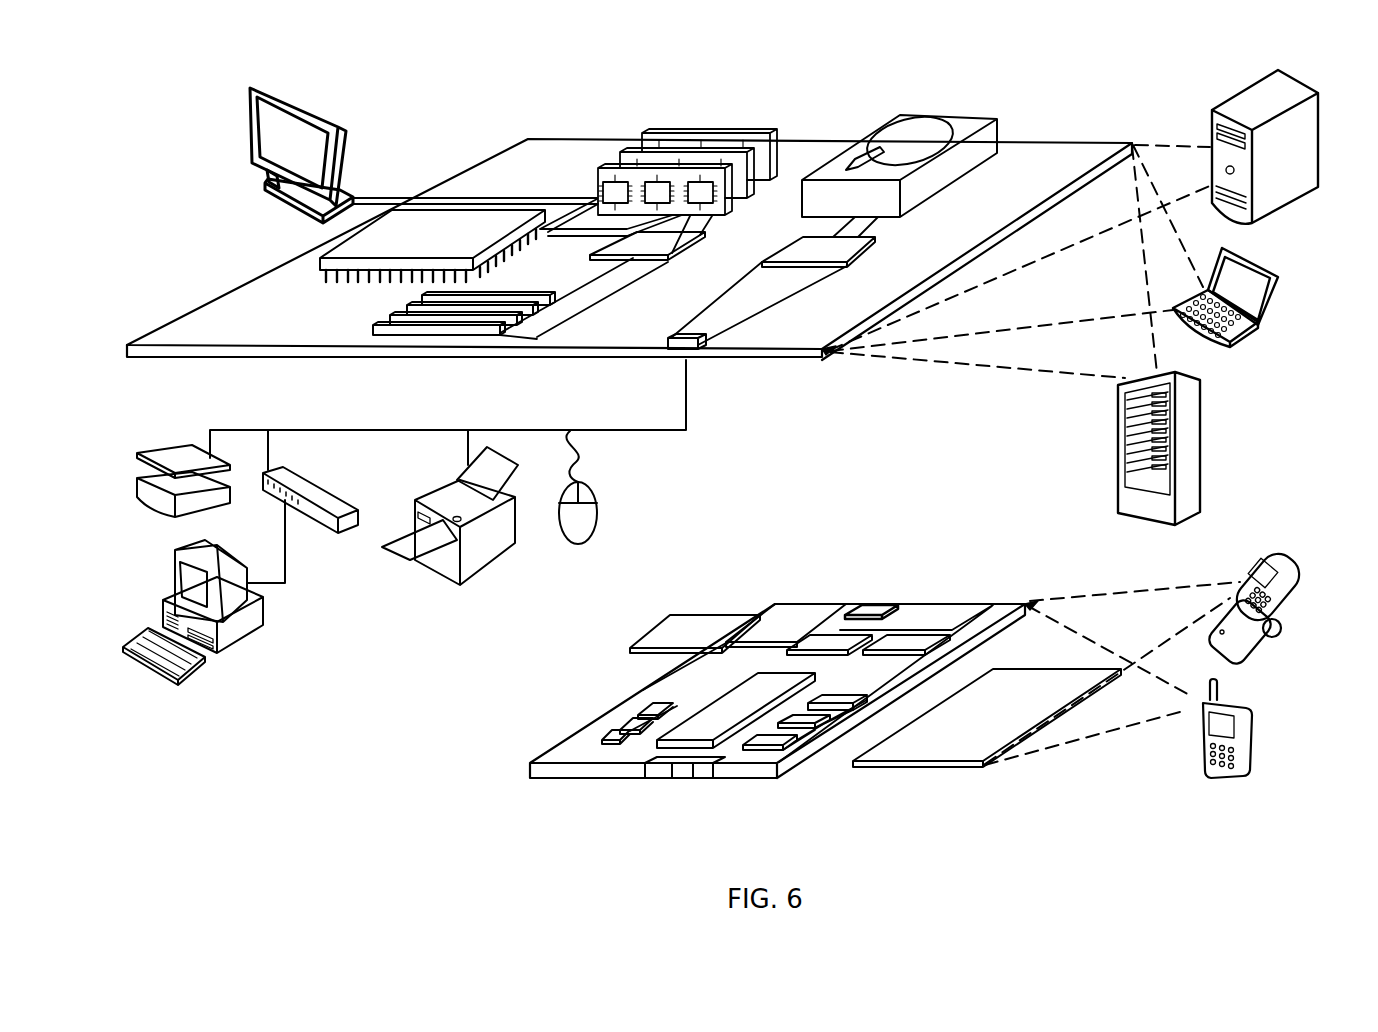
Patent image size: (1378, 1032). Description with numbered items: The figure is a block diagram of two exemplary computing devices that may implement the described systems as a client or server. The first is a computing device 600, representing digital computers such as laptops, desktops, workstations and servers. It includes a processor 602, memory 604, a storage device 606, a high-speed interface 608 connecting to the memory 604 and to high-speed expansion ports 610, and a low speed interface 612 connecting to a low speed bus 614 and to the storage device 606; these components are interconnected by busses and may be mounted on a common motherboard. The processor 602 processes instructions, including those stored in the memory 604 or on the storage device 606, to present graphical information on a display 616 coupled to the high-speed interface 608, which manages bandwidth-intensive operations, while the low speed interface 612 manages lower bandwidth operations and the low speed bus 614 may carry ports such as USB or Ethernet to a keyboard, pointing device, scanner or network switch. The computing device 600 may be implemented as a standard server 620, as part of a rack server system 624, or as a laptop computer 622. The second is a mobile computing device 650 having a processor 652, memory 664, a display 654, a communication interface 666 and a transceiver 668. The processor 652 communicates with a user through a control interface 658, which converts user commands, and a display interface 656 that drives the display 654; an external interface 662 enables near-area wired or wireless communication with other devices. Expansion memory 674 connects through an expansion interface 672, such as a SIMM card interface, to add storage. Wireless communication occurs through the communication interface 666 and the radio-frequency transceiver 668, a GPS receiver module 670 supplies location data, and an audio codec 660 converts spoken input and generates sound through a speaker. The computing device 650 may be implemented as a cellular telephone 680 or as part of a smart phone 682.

The computing device 600 is at (448, 112).
The processor 602 is at (325, 260).
The memory 604 is at (652, 133).
The storage device 606 is at (885, 126).
The high-speed interface 608 is at (628, 242).
The high-speed expansion ports 610 is at (380, 326).
The low speed interface 612 is at (800, 250).
The low speed bus 614 is at (702, 349).
The display 616 is at (253, 90).
The standard server 620 is at (1213, 127).
The laptop computer 622 is at (1279, 277).
The rack server system 624 is at (1118, 474).
The computing device 650 is at (508, 772).
The processor 652 is at (707, 732).
The display 654 is at (945, 742).
The display interface 656 is at (778, 746).
The control interface 658 is at (810, 726).
The audio codec 660 is at (835, 706).
The external interface 662 is at (672, 782).
The memory 664 is at (624, 728).
The communication interface 666 is at (830, 641).
The transceiver 668 is at (904, 641).
The GPS receiver module 670 is at (880, 607).
The expansion interface 672 is at (760, 613).
The expansion memory 674 is at (686, 630).
The cellular telephone 680 is at (1262, 565).
The smart phone 682 is at (1201, 738).